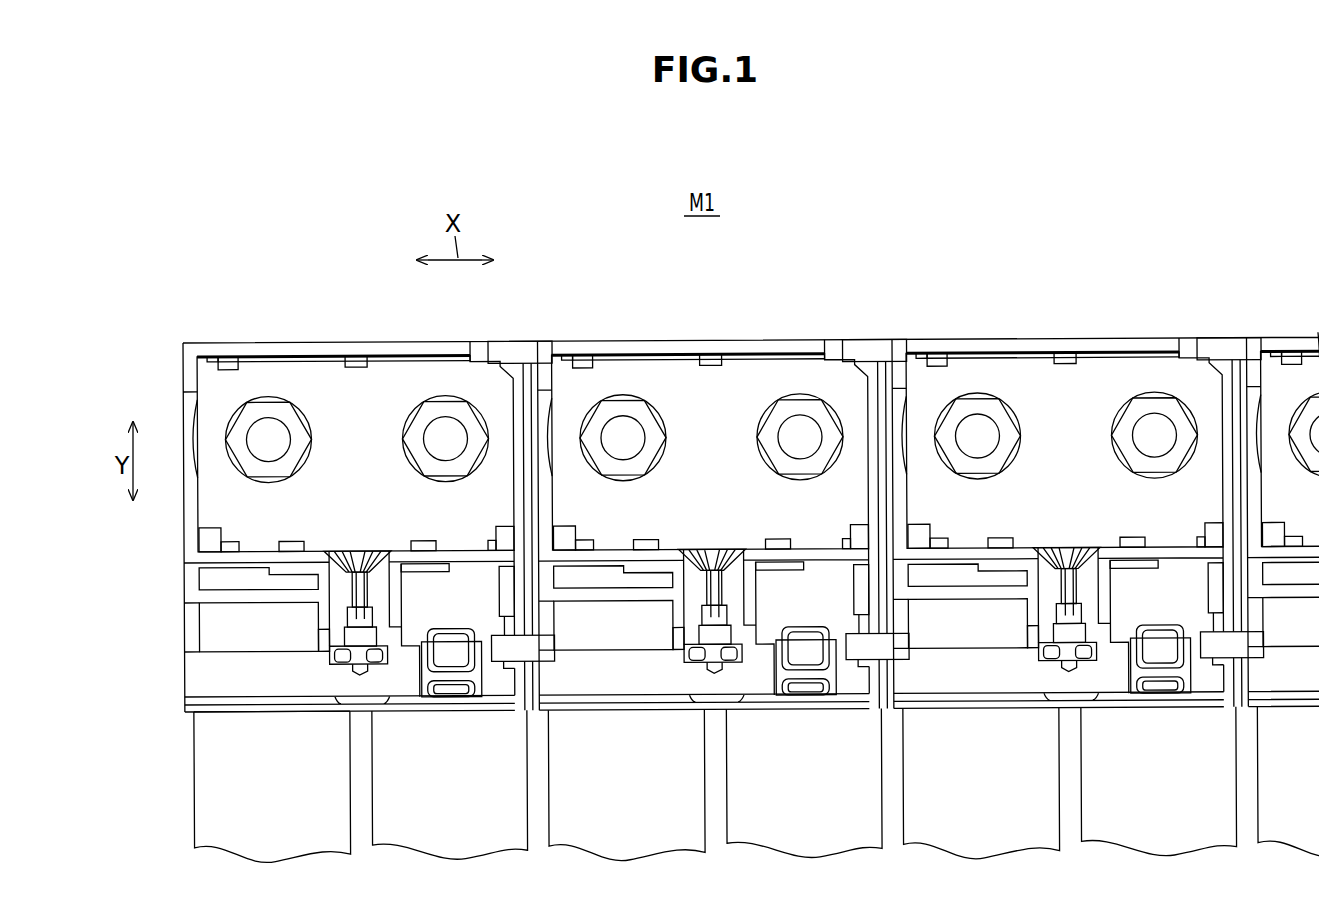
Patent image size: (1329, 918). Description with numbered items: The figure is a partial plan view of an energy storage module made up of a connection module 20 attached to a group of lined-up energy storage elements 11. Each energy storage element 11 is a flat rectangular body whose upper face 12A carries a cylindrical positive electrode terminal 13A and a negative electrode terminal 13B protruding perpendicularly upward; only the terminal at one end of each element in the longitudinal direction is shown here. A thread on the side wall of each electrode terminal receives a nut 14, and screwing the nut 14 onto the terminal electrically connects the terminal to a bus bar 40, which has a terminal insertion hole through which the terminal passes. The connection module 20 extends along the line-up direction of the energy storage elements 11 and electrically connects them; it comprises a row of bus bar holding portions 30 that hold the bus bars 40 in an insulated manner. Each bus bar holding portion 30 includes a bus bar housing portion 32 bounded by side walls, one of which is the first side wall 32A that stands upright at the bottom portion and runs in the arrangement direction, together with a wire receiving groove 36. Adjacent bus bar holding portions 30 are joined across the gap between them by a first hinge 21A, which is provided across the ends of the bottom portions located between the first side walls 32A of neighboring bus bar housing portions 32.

The energy storage element 11 is at (408, 760).
The upper face 12A is at (220, 815).
The positive electrode terminal 13A is at (268, 440).
The negative electrode terminal 13B is at (445, 440).
The nut 14 is at (622, 438).
The connection module 20 is at (1150, 313).
The first hinge 21A is at (520, 355).
The bus bar holding portion 30 is at (198, 318).
The bus bar housing portion 32 is at (228, 332).
The first side wall 32A is at (375, 346).
The wire receiving groove 36 is at (200, 683).
The bus bar 40 is at (325, 375).